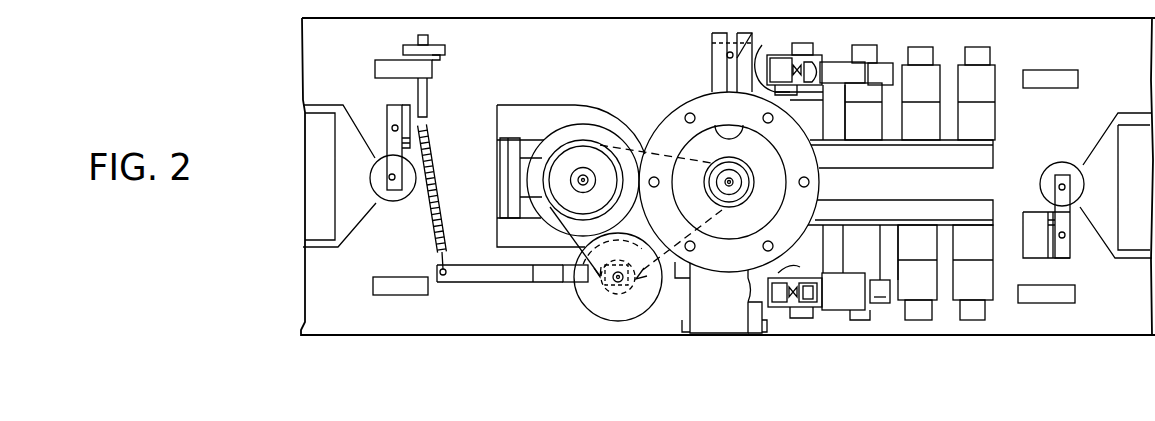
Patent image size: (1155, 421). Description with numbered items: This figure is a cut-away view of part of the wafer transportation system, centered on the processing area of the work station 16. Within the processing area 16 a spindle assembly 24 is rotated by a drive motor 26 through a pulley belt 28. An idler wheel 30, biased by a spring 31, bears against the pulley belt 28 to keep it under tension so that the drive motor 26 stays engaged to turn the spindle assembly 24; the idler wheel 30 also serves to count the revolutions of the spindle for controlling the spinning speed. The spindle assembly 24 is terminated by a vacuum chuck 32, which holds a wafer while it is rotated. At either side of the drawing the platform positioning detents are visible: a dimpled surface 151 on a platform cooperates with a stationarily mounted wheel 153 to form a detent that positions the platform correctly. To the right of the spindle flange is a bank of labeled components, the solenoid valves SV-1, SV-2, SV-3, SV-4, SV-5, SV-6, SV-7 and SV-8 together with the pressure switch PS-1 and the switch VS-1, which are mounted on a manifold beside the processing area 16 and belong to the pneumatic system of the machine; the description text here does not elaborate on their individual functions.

The work station / processing area 16 is at (671, 96).
The spindle assembly 24 is at (738, 188).
The drive motor 26 is at (552, 132).
The pulley belt 28 is at (571, 241).
The idler wheel 30 is at (586, 306).
The spring 31 is at (434, 221).
The vacuum chuck 32 is at (738, 166).
The dimpled surface 151 is at (378, 202).
The stationarily mounted wheel 153 is at (373, 157).
The solenoid valve SV-1 is at (767, 281).
The solenoid valve SV-2 is at (866, 271).
The solenoid valve SV-3 is at (917, 272).
The solenoid valve SV-4 is at (973, 272).
The solenoid valve SV-5 is at (767, 64).
The solenoid valve SV-6 is at (863, 92).
The solenoid valve SV-7 is at (921, 93).
The solenoid valve SV-8 is at (976, 93).
The pressure switch PS-1 is at (856, 73).
The vacuum switch VS-1 is at (840, 296).